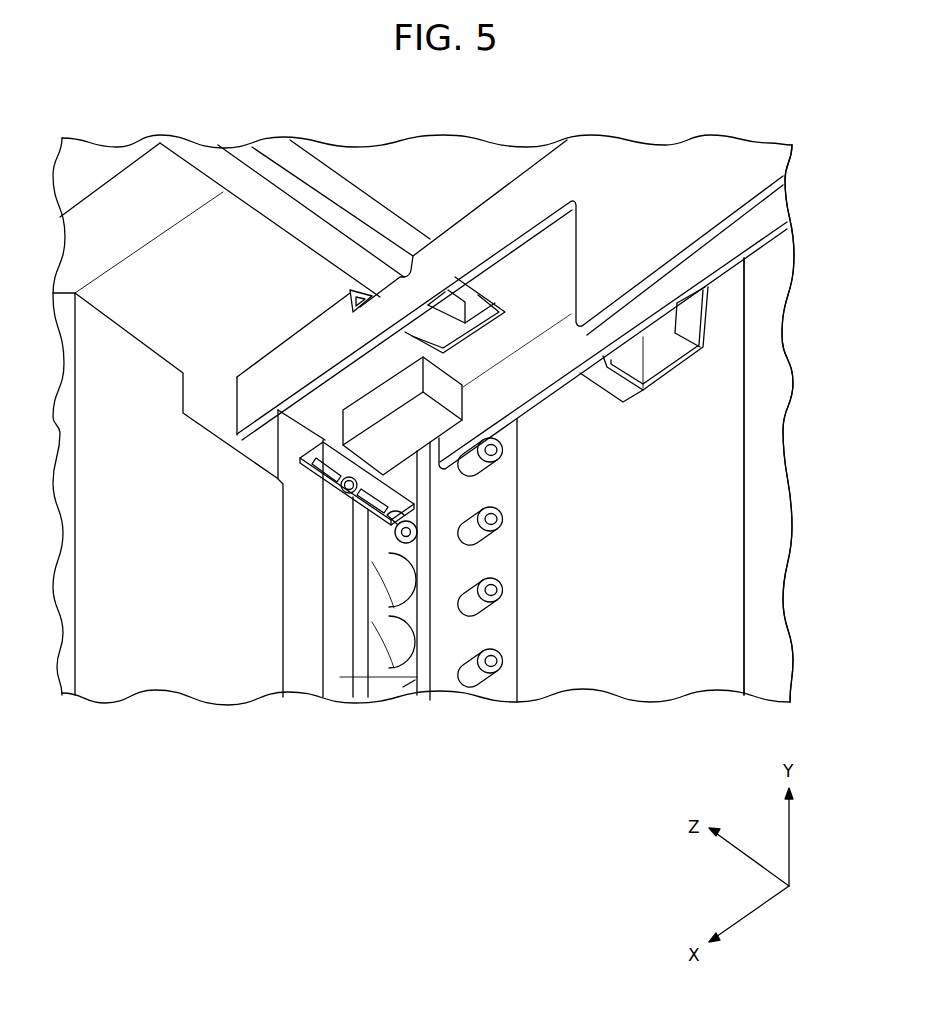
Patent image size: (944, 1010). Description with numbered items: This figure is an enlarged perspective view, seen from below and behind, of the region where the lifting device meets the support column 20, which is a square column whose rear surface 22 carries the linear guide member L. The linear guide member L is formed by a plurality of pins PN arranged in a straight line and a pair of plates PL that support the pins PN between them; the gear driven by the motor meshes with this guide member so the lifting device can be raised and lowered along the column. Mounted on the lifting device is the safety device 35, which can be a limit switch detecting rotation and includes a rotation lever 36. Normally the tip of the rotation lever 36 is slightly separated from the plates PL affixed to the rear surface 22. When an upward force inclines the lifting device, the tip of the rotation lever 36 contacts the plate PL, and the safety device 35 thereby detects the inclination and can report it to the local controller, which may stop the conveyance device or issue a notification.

The support column 20 is at (763, 528).
The rear surface 22 is at (697, 440).
The safety device 35 is at (397, 438).
The rotation lever 36 is at (390, 533).
The pins PN is at (398, 635).
The plates PL is at (447, 671).
The linear guide member L is at (533, 537).